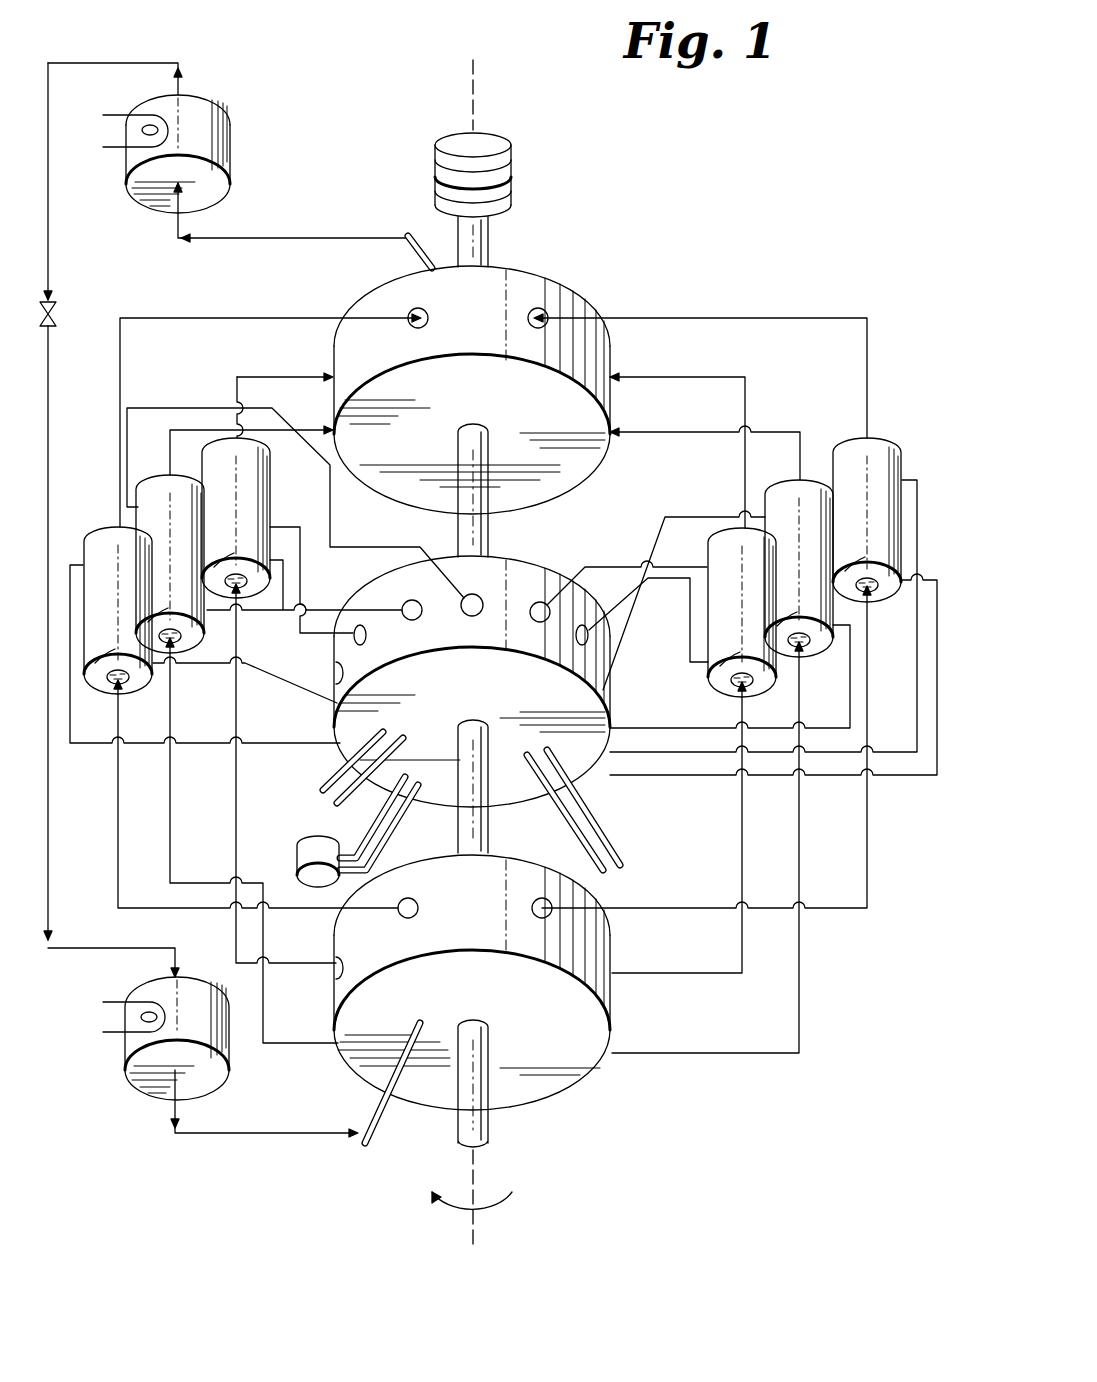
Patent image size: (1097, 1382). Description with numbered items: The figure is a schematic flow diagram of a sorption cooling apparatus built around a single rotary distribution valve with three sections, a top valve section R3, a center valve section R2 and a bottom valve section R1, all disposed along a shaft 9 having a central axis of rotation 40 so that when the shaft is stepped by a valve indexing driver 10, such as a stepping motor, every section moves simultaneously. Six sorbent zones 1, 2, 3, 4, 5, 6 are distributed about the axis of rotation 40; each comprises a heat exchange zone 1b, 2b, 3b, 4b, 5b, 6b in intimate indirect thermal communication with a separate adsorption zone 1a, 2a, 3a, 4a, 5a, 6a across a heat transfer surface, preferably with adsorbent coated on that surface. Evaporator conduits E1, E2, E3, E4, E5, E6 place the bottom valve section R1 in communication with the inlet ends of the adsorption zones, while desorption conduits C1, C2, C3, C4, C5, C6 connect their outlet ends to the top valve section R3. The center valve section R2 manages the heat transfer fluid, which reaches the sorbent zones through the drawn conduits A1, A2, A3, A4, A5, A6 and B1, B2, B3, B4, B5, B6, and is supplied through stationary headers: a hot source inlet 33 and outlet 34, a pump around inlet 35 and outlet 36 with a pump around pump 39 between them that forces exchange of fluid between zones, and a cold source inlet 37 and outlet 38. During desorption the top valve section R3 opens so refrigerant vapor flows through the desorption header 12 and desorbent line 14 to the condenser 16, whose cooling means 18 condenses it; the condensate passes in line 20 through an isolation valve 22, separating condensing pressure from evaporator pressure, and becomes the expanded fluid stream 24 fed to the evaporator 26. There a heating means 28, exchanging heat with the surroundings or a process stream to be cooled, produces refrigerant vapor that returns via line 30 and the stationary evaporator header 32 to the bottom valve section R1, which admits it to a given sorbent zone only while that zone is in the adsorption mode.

The sorbent zone 1 is at (111, 626).
The adsorption zone 1a is at (110, 686).
The heat exchange zone 1b is at (100, 662).
The sorbent zone 2 is at (174, 589).
The adsorption zone 2a is at (180, 638).
The heat exchange zone 2b is at (152, 620).
The sorbent zone 3 is at (239, 543).
The adsorption zone 3a is at (244, 584).
The heat exchange zone 3b is at (214, 564).
The sorbent zone 4 is at (734, 627).
The adsorption zone 4a is at (734, 684).
The heat exchange zone 4b is at (720, 666).
The sorbent zone 5 is at (801, 586).
The adsorption zone 5a is at (804, 634).
The heat exchange zone 5b is at (776, 624).
The sorbent zone 6 is at (869, 539).
The adsorption zone 6a is at (872, 586).
The heat exchange zone 6b is at (846, 570).
The shaft 9 is at (488, 234).
The valve indexing driver 10 is at (504, 150).
The desorption header 12 is at (400, 248).
The desorbent line 14 is at (244, 238).
The condenser 16 is at (230, 140).
The cooling means 18 is at (114, 148).
The condensate line 20 is at (128, 63).
The isolation valve 22 is at (62, 306).
The expanded fluid stream 24 is at (50, 455).
The evaporator 26 is at (202, 984).
The heating means 28 is at (120, 1040).
The line 30 is at (274, 1133).
The evaporator header 32 is at (372, 1134).
The hot source inlet 33 is at (322, 770).
The hot source outlet 34 is at (406, 738).
The pump around inlet 35 is at (352, 850).
The pump around outlet 36 is at (398, 826).
The cold source inlet 37 is at (568, 836).
The cold source outlet 38 is at (608, 832).
The pump around pump 39 is at (298, 860).
The central axis of rotation 40 is at (470, 98).
The bottom valve section R1 is at (456, 995).
The center valve section R2 is at (460, 699).
The top valve section R3 is at (460, 407).
The conduit A1 is at (222, 746).
The conduit A2 is at (192, 408).
The conduit A3 is at (300, 558).
The conduit A4 is at (604, 560).
The conduit A5 is at (696, 514).
The conduit A6 is at (892, 749).
The conduit B1 is at (306, 698).
The conduit B2 is at (376, 610).
The conduit B3 is at (370, 640).
The conduit B4 is at (690, 662).
The conduit B5 is at (662, 726).
The conduit B6 is at (892, 782).
The desorption conduit C1 is at (186, 318).
The desorption conduit C2 is at (290, 442).
The desorption conduit C3 is at (300, 377).
The desorption conduit C4 is at (680, 378).
The desorption conduit C5 is at (672, 434).
The desorption conduit C6 is at (775, 318).
The evaporator conduit E1 is at (112, 834).
The evaporator conduit E2 is at (172, 834).
The evaporator conduit E3 is at (242, 800).
The evaporator conduit E4 is at (654, 976).
The evaporator conduit E5 is at (806, 1000).
The evaporator conduit E6 is at (876, 878).